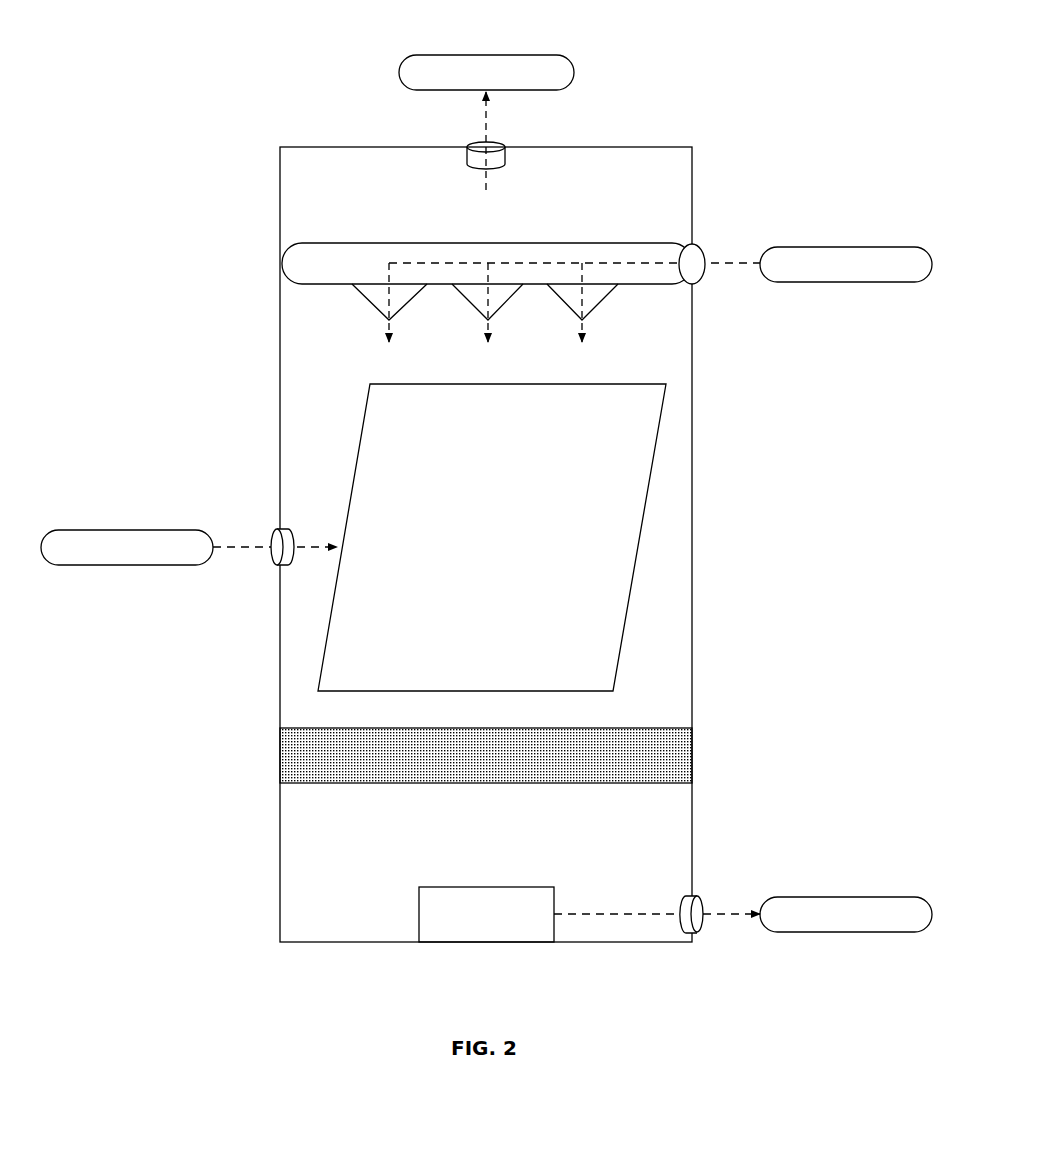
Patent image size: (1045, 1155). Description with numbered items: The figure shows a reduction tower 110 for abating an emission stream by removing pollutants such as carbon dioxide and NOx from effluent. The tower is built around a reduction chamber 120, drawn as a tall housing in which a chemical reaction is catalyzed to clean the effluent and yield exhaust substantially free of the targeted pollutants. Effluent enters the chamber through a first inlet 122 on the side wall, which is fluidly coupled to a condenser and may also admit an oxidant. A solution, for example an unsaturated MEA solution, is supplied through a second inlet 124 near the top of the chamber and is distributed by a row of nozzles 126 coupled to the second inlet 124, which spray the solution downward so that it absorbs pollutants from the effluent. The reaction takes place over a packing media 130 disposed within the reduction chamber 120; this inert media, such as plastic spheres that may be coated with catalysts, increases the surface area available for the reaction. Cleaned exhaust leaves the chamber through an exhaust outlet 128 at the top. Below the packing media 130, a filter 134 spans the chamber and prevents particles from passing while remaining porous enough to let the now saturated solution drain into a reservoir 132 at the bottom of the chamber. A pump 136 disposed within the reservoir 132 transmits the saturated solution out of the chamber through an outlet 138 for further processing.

The reduction tower 110 is at (138, 63).
The reduction chamber 120 is at (280, 198).
The first inlet 122 is at (274, 530).
The second inlet 124 is at (697, 247).
The nozzle 126 is at (370, 301).
The exhaust outlet 128 is at (467, 147).
The packing media 130 is at (492, 537).
The reservoir 132 is at (486, 862).
The filter 134 is at (486, 755).
The pump 136 is at (549, 914).
The outlet 138 is at (699, 897).